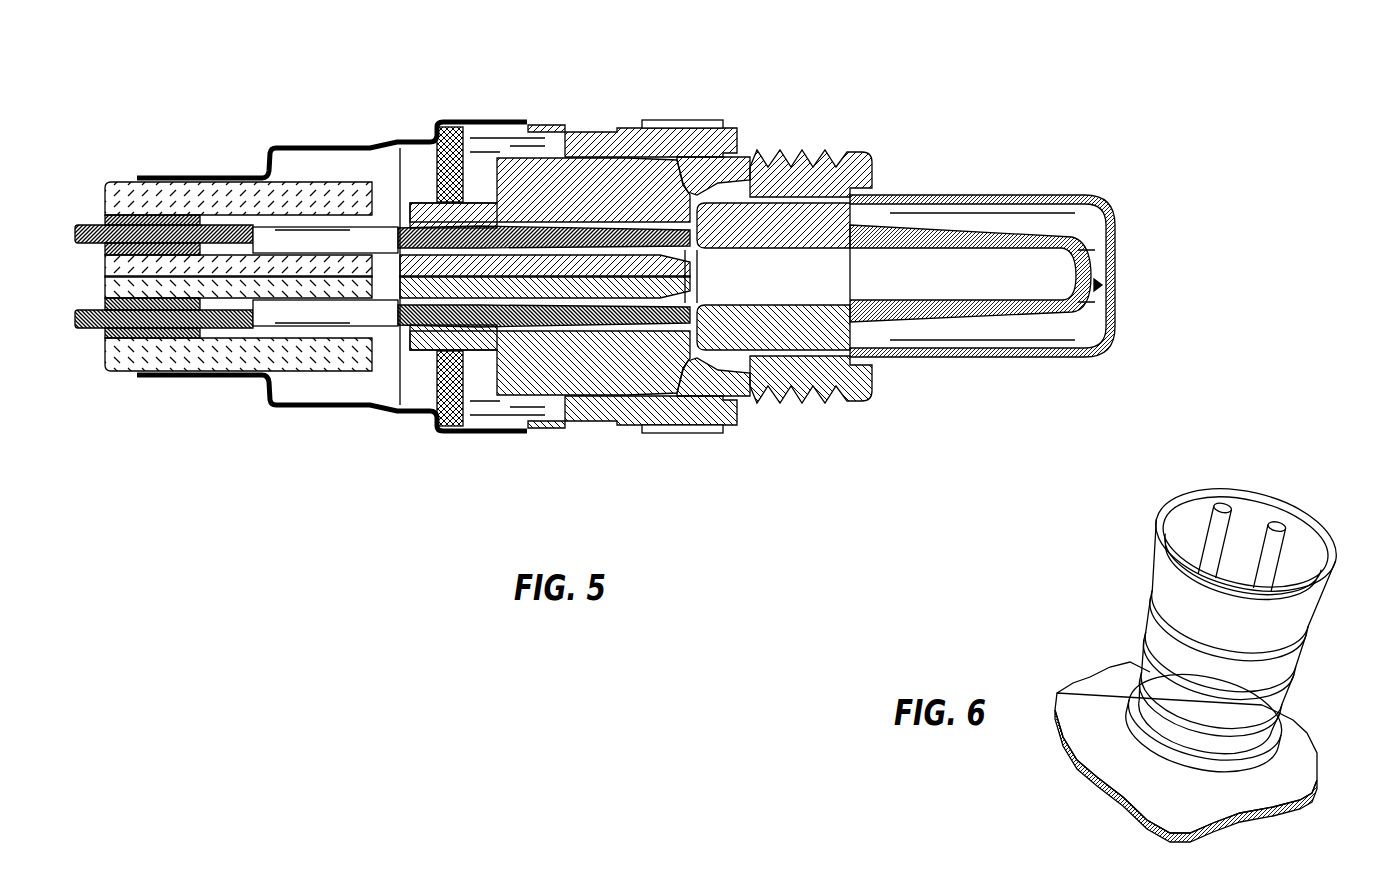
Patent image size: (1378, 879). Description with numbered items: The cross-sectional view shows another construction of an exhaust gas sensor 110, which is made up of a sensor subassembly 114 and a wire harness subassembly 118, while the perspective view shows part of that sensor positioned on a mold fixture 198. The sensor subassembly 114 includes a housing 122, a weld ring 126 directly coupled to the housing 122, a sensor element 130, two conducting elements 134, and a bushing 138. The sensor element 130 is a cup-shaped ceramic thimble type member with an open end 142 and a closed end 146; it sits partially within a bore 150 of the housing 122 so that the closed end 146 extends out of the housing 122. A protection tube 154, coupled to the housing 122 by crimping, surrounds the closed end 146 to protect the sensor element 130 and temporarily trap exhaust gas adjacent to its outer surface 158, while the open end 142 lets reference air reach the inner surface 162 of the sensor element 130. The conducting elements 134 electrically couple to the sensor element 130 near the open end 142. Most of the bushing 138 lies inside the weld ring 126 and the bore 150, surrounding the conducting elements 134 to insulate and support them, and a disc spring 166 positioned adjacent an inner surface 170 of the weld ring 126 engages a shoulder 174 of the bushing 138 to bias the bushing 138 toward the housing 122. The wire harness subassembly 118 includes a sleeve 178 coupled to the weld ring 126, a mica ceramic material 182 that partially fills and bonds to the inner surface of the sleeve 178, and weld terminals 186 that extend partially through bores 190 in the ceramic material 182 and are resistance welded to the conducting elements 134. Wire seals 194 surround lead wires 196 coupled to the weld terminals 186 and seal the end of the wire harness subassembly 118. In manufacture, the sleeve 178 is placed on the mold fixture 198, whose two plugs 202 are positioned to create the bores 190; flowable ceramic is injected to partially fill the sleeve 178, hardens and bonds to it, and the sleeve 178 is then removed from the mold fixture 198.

In FIG. 5, the exhaust gas sensor 110 is at (620, 277).
In FIG. 5, the sensor subassembly 114 is at (774, 411).
In FIG. 5, the wire harness subassembly 118 is at (299, 291).
In FIG. 5, the housing 122 is at (677, 424).
In FIG. 5, the weld ring 126 is at (582, 428).
In FIG. 5, the sensor element 130 is at (858, 237).
In FIG. 5, the conducting elements 134 is at (640, 217).
In FIG. 5, the bushing 138 is at (550, 383).
In FIG. 5, the open end 142 is at (718, 266).
In FIG. 5, the closed end 146 is at (1097, 285).
In FIG. 5, the bore 150 is at (793, 226).
In FIG. 5, the protection tube 154 is at (953, 358).
In FIG. 5, the outer surface 158 is at (1060, 237).
In FIG. 5, the inner surface 162 is at (990, 253).
In FIG. 5, the disc spring 166 is at (463, 172).
In FIG. 5, the inner surface 170 is at (453, 157).
In FIG. 5, the shoulder 174 is at (460, 374).
In FIG. 5, the sleeve 178 is at (380, 140).
In FIG. 6, the sleeve 178 is at (1153, 560).
In FIG. 5, the ceramic material 182 is at (290, 165).
In FIG. 5, the weld terminals 186 is at (265, 321).
In FIG. 5, the bores 190 is at (293, 338).
In FIG. 5, the wire seals 194 is at (167, 341).
In FIG. 5, the lead wires 196 is at (80, 312).
In FIG. 6, the mold fixture 198 is at (1283, 748).
In FIG. 6, the plugs 202 is at (1277, 522).